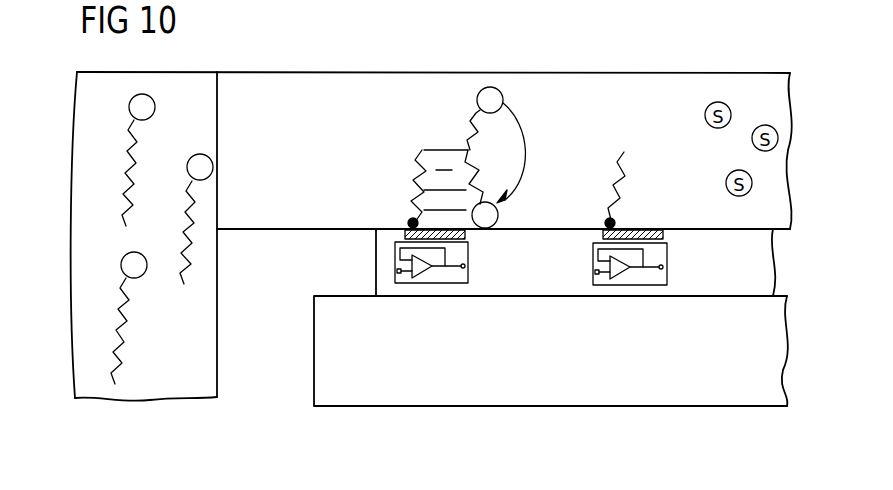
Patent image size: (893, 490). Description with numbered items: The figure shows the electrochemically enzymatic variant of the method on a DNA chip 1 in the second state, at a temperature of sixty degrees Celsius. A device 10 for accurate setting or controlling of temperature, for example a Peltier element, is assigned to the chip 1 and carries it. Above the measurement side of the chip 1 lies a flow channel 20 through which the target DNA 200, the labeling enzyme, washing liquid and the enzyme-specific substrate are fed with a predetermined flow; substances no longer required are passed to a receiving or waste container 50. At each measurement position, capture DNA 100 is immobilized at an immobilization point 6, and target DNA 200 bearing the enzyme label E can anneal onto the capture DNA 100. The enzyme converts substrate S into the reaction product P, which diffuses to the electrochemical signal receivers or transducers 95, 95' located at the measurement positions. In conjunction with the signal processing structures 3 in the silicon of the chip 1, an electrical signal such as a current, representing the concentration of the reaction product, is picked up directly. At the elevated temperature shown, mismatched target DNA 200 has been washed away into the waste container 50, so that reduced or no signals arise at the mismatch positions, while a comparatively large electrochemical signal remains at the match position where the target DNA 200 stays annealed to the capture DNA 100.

The DNA chip 1 is at (743, 253).
The signal processing structures 3 is at (405, 283).
The immobilization point 6 is at (408, 220).
The device for controlling of temperature 10 is at (617, 385).
The flow channel 20 is at (233, 90).
The waste container 50 is at (160, 372).
The electrochemical signal receiver or transducer 95 is at (469, 254).
The electrochemical signal receiver or transducer 95' is at (663, 249).
The capture DNA 100 is at (418, 176).
The target DNA 200 is at (186, 191).